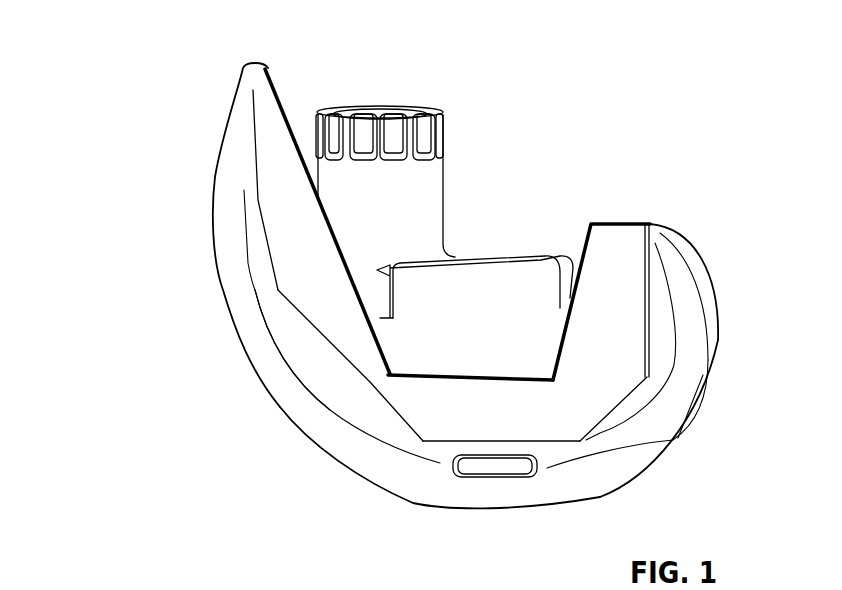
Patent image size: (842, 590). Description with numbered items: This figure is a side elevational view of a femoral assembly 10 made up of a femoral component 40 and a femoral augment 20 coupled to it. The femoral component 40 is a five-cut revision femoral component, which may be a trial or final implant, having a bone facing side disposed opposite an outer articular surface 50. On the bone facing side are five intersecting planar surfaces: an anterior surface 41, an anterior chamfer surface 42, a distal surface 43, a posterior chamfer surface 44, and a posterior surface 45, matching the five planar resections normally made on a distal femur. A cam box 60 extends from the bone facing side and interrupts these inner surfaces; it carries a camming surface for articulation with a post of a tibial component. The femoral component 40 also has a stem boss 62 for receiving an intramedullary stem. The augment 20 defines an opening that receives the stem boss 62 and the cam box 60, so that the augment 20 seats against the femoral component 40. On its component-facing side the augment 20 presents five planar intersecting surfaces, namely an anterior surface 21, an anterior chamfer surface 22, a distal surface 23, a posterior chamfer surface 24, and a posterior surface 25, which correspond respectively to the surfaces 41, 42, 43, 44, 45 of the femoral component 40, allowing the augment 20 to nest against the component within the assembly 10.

The femoral assembly 10 is at (191, 31).
The femoral augment 20 is at (621, 207).
The anterior surface 21 is at (263, 157).
The anterior chamfer surface 22 is at (268, 390).
The distal surface 23 is at (438, 442).
The posterior chamfer surface 24 is at (587, 431).
The posterior surface 25 is at (650, 342).
The femoral component 40 is at (187, 297).
The anterior surface 41 is at (265, 140).
The anterior chamfer surface 42 is at (318, 433).
The distal surface 43 is at (502, 442).
The posterior chamfer surface 44 is at (612, 414).
The posterior surface 45 is at (650, 283).
The outer articular surface 50 is at (348, 472).
The cam box 60 is at (500, 254).
The stem boss 62 is at (446, 163).